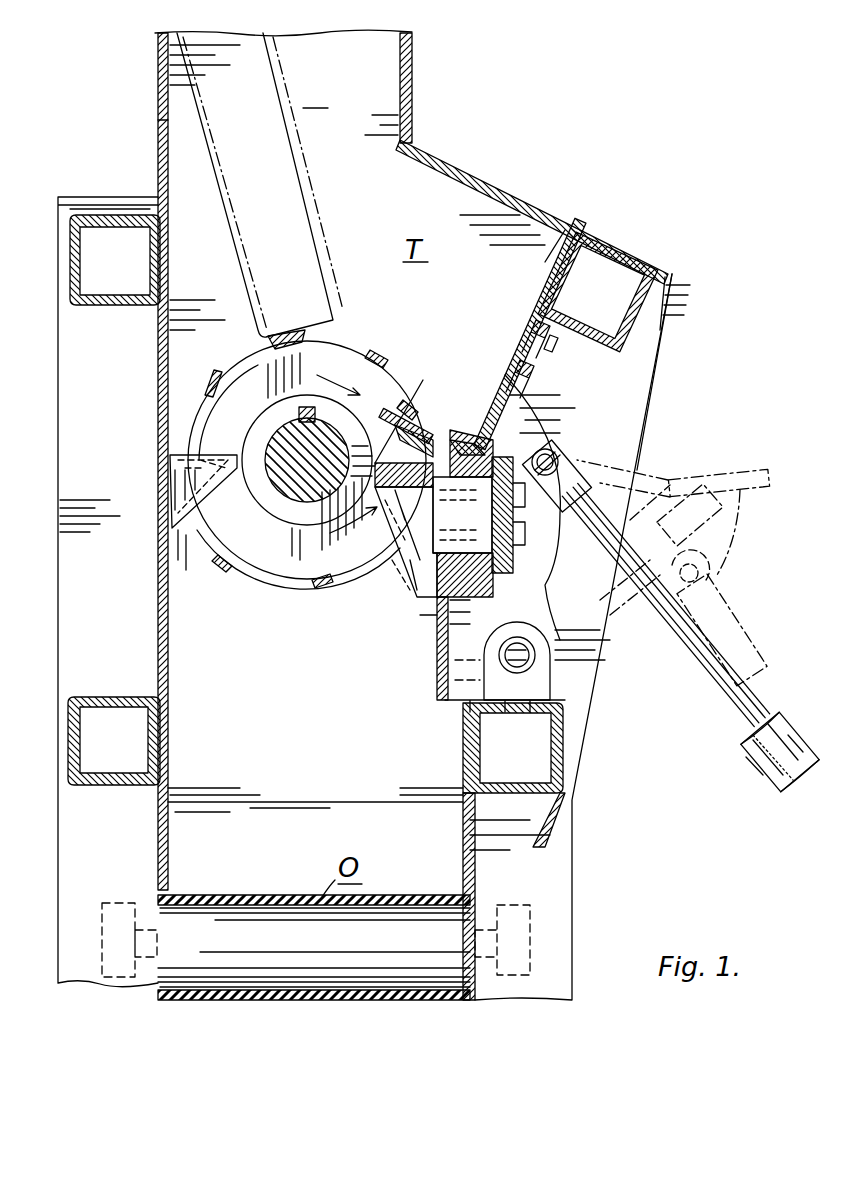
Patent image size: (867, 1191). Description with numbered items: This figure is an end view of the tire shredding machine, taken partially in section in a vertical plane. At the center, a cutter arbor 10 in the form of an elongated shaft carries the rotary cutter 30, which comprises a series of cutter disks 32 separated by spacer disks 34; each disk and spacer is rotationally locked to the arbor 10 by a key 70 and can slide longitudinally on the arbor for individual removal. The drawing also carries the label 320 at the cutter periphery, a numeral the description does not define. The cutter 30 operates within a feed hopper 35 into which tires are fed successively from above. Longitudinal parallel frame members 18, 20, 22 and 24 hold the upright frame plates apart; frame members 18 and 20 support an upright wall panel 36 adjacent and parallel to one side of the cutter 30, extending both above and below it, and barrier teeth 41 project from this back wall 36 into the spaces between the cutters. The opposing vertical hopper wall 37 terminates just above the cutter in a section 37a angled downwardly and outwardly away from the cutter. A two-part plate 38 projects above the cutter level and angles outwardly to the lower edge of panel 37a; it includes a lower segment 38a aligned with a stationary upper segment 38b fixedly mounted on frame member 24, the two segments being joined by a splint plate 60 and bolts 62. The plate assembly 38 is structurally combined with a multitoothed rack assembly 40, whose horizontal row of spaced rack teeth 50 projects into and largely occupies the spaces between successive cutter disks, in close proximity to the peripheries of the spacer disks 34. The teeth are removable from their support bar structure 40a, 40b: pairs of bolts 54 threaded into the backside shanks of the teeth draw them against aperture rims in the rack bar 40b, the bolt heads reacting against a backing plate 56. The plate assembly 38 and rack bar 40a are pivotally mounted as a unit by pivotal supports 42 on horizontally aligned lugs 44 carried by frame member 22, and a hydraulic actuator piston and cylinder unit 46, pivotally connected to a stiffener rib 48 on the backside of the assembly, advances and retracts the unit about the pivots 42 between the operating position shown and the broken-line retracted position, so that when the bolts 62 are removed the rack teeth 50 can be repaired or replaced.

The cutter arbor 10 is at (297, 493).
The frame member 18 is at (112, 215).
The frame member 20 is at (104, 697).
The frame member 22 is at (563, 737).
The frame member 24 is at (622, 255).
The cutter 30 is at (352, 612).
The cutter disks 32 is at (320, 365).
The spacer disks 34 is at (270, 497).
The feed hopper 35 is at (428, 80).
The upright wall panel 36 is at (158, 136).
The vertical hopper wall 37 is at (406, 90).
The angled section 37a is at (470, 175).
The two-part plate 38 is at (490, 336).
The lower segment 38a is at (560, 395).
The upper segment 38b is at (535, 270).
The rack assembly 40 is at (337, 540).
The rack bar 40a is at (440, 637).
The rack bar 40b is at (560, 445).
The barrier teeth 41 is at (232, 450).
The pivotal supports 42 is at (495, 680).
The lugs 44 is at (497, 663).
The hydraulic actuator piston and cylinder unit 46 is at (756, 766).
The stiffener rib 48 is at (733, 530).
The rack teeth 50 is at (435, 420).
The bolts 54 is at (600, 455).
The backing plate 56 is at (580, 628).
The splint plate 60 is at (524, 338).
The bolts 62 is at (545, 365).
The key 70 is at (298, 412).
The rotor blades 320 is at (446, 424).